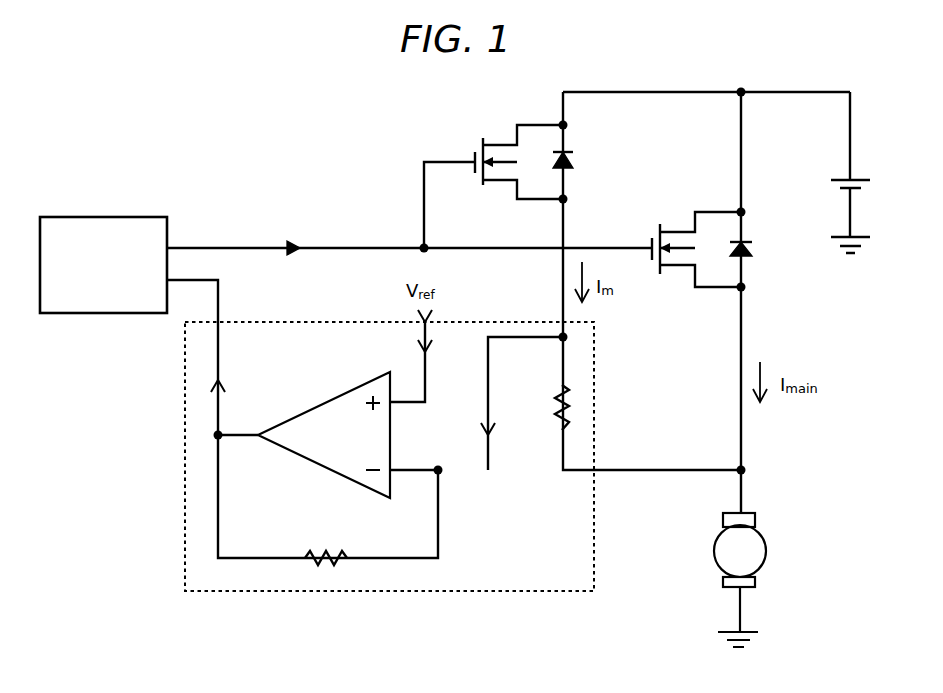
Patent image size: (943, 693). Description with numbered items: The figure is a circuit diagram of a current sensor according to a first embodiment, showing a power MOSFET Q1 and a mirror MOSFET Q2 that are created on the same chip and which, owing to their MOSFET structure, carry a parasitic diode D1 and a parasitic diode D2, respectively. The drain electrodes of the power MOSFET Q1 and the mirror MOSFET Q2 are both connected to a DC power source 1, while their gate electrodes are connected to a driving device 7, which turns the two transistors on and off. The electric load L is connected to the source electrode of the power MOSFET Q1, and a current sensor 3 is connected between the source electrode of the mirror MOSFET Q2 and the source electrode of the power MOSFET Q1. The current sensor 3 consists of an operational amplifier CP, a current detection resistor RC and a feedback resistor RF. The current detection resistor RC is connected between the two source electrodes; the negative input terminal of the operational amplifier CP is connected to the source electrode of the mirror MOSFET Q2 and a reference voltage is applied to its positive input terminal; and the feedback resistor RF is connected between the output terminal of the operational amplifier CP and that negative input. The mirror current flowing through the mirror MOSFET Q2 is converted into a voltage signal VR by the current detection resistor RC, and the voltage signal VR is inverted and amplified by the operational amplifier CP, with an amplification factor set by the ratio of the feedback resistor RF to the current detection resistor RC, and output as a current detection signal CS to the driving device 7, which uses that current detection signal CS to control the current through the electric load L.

The driving device 7 is at (125, 217).
The DC power source 1 is at (861, 180).
The current sensor 3 is at (528, 591).
The power MOSFET Q1 is at (676, 268).
The mirror MOSFET Q2 is at (483, 138).
The parasitic diode D1 is at (752, 250).
The parasitic diode D2 is at (573, 160).
The current detection signal CS is at (225, 382).
The operational amplifier CP is at (297, 455).
The voltage signal VR is at (494, 435).
The current detection resistor RC is at (570, 415).
The feedback resistor RF is at (335, 565).
The electric load L is at (768, 548).